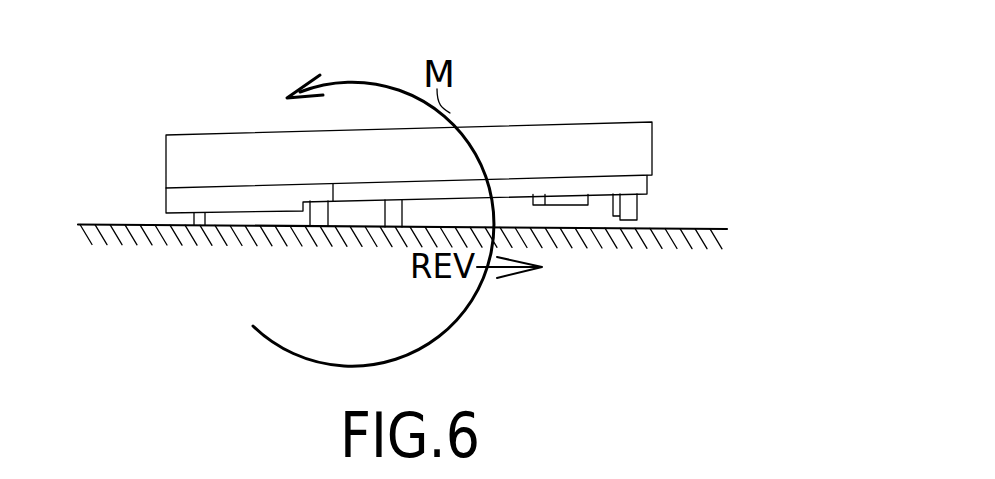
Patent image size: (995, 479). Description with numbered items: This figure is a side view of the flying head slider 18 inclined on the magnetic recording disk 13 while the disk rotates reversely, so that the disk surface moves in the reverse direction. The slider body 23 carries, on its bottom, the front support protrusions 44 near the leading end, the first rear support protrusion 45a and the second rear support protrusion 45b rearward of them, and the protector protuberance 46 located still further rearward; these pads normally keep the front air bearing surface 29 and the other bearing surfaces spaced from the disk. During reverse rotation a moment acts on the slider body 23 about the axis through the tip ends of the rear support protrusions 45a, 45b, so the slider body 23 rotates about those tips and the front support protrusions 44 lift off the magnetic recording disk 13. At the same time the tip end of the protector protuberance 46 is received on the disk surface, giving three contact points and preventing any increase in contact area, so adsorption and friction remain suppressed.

The magnetic recording disk 13 is at (103, 225).
The flying head slider 18 is at (407, 173).
The slider body 23 is at (178, 137).
The front air bearing surface 29 is at (560, 205).
The front support protrusions 44 is at (633, 210).
The first rear support protrusion 45a is at (393, 222).
The second rear support protrusion 45b is at (320, 221).
The protector protuberance 46 is at (198, 227).